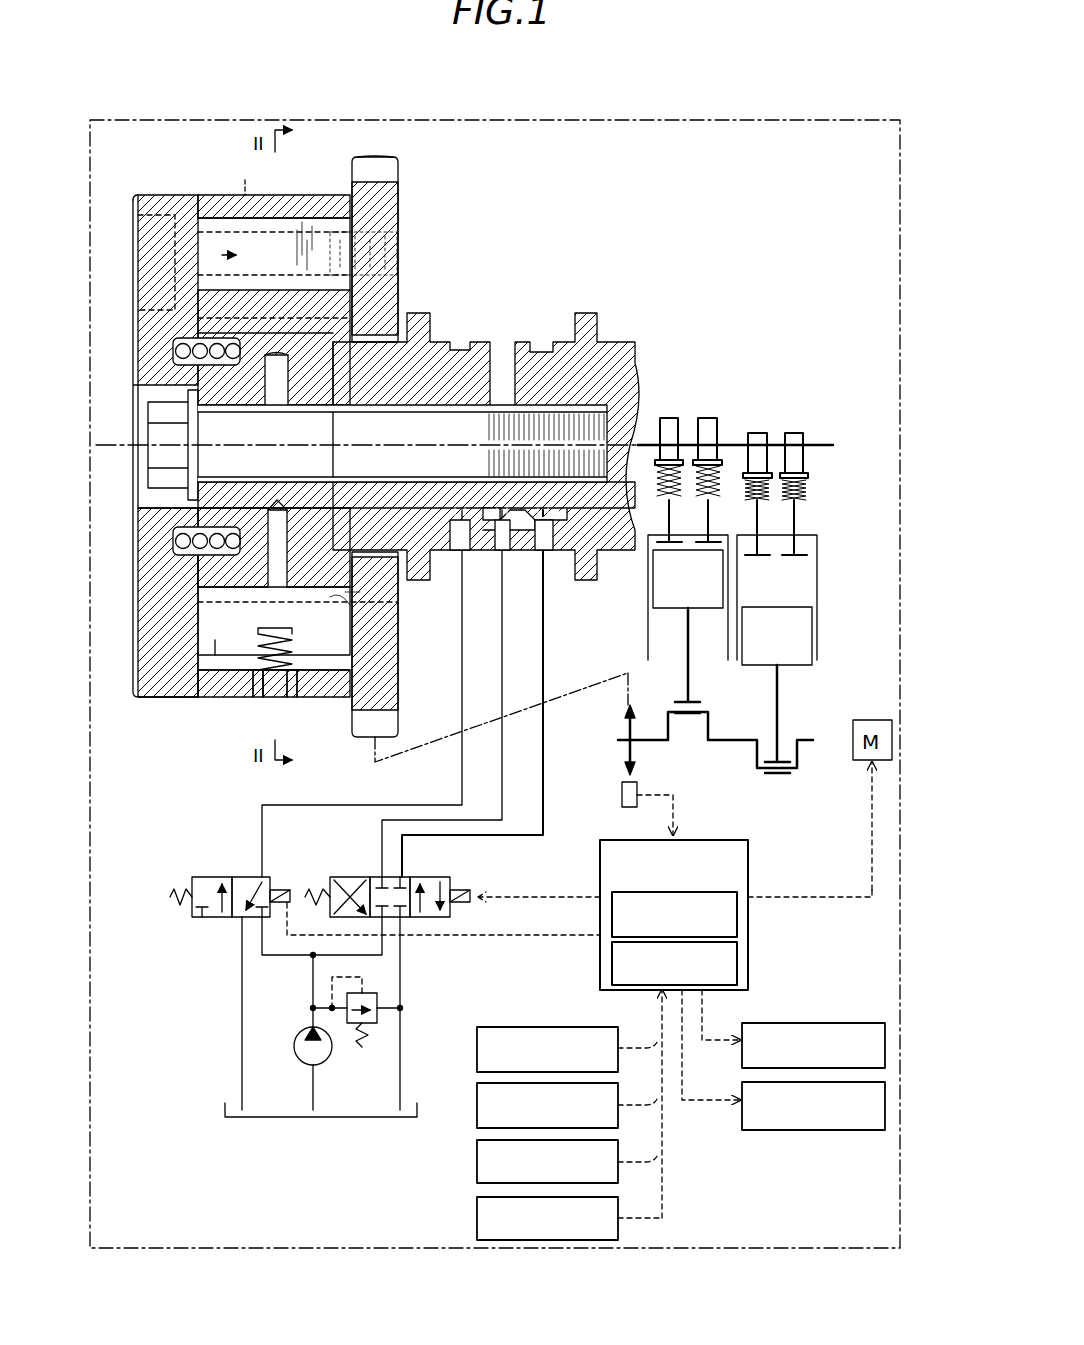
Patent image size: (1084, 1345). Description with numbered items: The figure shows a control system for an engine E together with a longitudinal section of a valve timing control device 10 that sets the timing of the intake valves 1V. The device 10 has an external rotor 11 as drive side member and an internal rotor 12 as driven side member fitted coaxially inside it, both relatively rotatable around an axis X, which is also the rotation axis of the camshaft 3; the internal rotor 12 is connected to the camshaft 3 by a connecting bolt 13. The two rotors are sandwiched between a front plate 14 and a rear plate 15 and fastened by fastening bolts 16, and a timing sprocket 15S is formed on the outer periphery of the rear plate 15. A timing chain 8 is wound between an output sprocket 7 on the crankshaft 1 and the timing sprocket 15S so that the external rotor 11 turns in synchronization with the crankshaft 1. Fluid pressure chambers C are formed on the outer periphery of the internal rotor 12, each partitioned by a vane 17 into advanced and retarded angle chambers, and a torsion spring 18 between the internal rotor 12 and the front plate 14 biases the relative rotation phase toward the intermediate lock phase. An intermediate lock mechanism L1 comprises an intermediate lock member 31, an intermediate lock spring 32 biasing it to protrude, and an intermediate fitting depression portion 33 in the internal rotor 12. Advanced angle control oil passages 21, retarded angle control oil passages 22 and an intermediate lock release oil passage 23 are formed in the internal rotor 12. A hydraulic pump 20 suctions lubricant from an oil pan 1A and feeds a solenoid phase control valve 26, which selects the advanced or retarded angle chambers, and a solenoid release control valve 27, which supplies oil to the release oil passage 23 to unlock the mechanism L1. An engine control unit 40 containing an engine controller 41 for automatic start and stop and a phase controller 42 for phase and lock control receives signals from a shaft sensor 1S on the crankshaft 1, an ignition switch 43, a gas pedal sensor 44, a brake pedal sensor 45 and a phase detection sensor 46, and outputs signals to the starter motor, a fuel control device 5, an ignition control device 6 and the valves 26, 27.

The engine E is at (727, 120).
The axis X is at (367, 445).
The valve timing control device 10 is at (146, 411).
The external rotor 11 is at (210, 195).
The internal rotor 12 is at (210, 572).
The connecting bolt 13 is at (148, 480).
The front plate 14 is at (133, 650).
The rear plate 15 is at (398, 210).
The timing sprocket 15S is at (385, 158).
The fastening bolts 16 is at (247, 176).
The vane 17 is at (306, 205).
The torsion spring 18 is at (175, 352).
The fluid pressure chamber C is at (222, 255).
The intermediate lock mechanism L1 is at (225, 662).
The advanced angle control oil passage 21 is at (276, 406).
The retarded angle control oil passage 22 is at (545, 630).
The intermediate lock release oil passage 23 is at (282, 508).
The intermediate lock member 31 is at (235, 670).
The intermediate lock spring 32 is at (290, 665).
The intermediate fitting depression portion 33 is at (393, 604).
The camshaft 3 is at (622, 365).
The intake valves 1V is at (700, 545).
The crankshaft 1 is at (726, 741).
The shaft sensor 1S is at (622, 797).
The output sprocket 7 is at (625, 728).
The timing chain 8 is at (470, 728).
The hydraulic pump 20 is at (296, 1035).
The oil pan 1A is at (225, 1112).
The phase control valve 26 is at (350, 877).
The release control valve 27 is at (205, 877).
The engine control unit (ECU) 40 is at (706, 915).
The engine controller 41 is at (737, 918).
The phase controller 42 is at (737, 962).
The ignition switch 43 is at (503, 1026).
The gas pedal sensor 44 is at (477, 1105).
The brake pedal sensor 45 is at (477, 1163).
The phase detection sensor 46 is at (477, 1219).
The fuel control device 5 is at (812, 1023).
The ignition control device 6 is at (812, 1130).